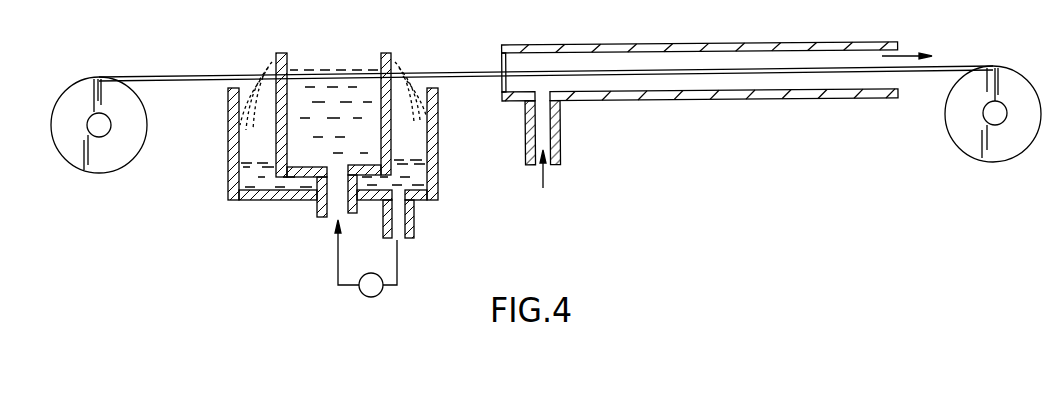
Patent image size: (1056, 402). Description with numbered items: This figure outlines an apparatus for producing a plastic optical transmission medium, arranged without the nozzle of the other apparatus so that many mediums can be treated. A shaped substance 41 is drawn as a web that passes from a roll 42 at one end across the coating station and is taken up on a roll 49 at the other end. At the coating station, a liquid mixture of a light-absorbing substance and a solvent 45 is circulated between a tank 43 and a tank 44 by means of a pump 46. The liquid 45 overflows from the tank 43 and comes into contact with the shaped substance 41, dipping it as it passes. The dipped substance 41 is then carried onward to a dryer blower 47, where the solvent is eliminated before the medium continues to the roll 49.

The shaped substance 41 is at (178, 77).
The supply roll 42 is at (89, 172).
The tank 43 is at (281, 53).
The tank 44 is at (241, 201).
The liquid mixture of a light-absorbing substance and a solvent 45 is at (305, 157).
The pump 46 is at (372, 297).
The dryer blower 47 is at (722, 100).
The take-up roll 49 is at (980, 162).